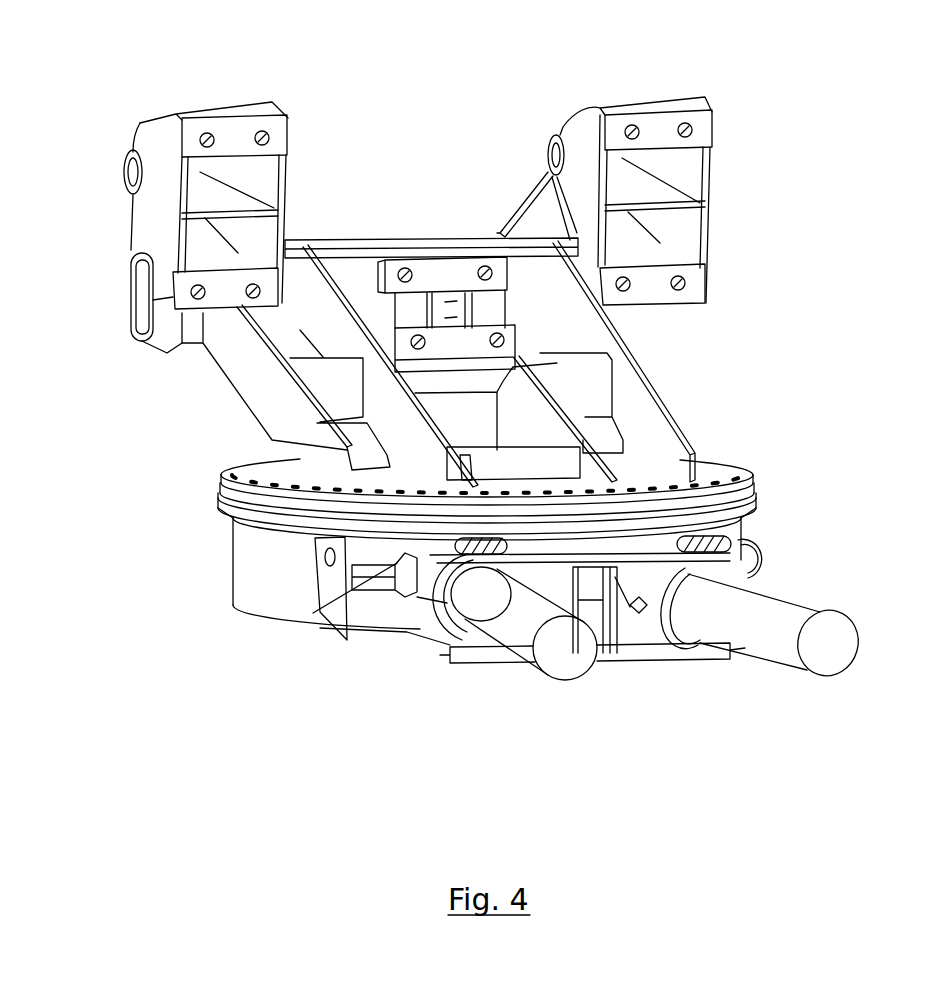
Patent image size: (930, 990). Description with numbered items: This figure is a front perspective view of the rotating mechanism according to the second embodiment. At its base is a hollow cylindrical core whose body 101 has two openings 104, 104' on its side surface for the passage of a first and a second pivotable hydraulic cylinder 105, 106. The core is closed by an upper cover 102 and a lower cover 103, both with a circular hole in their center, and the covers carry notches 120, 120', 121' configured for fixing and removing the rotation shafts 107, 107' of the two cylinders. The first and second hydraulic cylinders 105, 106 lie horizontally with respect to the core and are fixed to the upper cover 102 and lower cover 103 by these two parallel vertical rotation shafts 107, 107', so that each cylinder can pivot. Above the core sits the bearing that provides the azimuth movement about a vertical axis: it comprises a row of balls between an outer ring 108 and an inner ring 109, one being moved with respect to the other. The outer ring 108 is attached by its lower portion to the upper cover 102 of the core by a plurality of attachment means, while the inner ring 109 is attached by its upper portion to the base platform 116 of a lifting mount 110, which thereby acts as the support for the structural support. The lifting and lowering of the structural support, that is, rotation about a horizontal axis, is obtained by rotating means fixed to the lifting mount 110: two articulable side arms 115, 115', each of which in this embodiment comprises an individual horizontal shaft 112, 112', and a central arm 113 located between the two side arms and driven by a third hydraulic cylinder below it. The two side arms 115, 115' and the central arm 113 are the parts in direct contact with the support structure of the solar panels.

The body 101 is at (243, 593).
The upper cover 102 is at (215, 507).
The lower cover 103 is at (372, 633).
The opening 104 is at (334, 605).
The opening 104' is at (610, 654).
The first pivotable hydraulic cylinder 105 is at (528, 640).
The second pivotable hydraulic cylinder 106 is at (765, 638).
The rotation shaft 107 is at (438, 653).
The rotation shaft 107' is at (783, 523).
The outer ring 108 is at (757, 503).
The inner ring 109 is at (228, 466).
The lifting mount 110 is at (222, 355).
The horizontal shaft 112 is at (102, 144).
The horizontal shaft 112' is at (517, 127).
The central arm 113 is at (442, 270).
The articulable side arm 115 is at (195, 189).
The articulable side arm 115' is at (660, 194).
The base platform 116 is at (707, 458).
The notch 120 is at (487, 696).
The notch 120' is at (671, 705).
The notch 121' is at (602, 631).